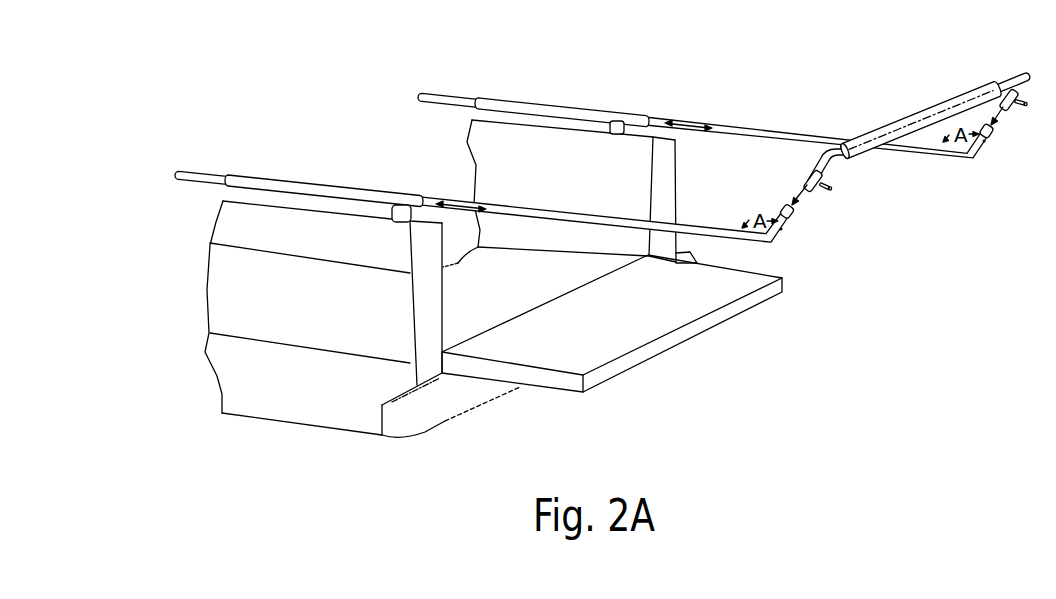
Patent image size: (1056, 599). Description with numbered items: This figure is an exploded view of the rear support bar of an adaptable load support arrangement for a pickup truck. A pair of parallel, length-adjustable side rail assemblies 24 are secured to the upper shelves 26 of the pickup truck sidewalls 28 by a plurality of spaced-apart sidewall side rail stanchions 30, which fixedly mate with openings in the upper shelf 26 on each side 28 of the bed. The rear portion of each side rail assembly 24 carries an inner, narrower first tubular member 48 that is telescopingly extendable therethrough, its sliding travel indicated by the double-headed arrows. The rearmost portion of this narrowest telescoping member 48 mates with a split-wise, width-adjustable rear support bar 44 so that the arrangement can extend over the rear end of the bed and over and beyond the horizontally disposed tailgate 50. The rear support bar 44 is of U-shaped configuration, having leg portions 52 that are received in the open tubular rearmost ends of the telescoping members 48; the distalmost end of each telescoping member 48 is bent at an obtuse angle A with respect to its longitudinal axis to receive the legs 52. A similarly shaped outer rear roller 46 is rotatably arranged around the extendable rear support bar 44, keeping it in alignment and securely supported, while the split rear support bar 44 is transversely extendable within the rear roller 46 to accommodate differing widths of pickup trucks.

The side rail assembly 24 is at (292, 183).
The upper shelf 26 is at (573, 131).
The pickup truck sidewall 28 is at (258, 315).
The sidewall side rail stanchion 30 is at (398, 221).
The rear support bar 44 is at (1018, 76).
The outer rear roller 46 is at (937, 107).
The first tubular member 48 is at (688, 226).
The tailgate 50 is at (666, 340).
The leg portion 52 is at (813, 189).